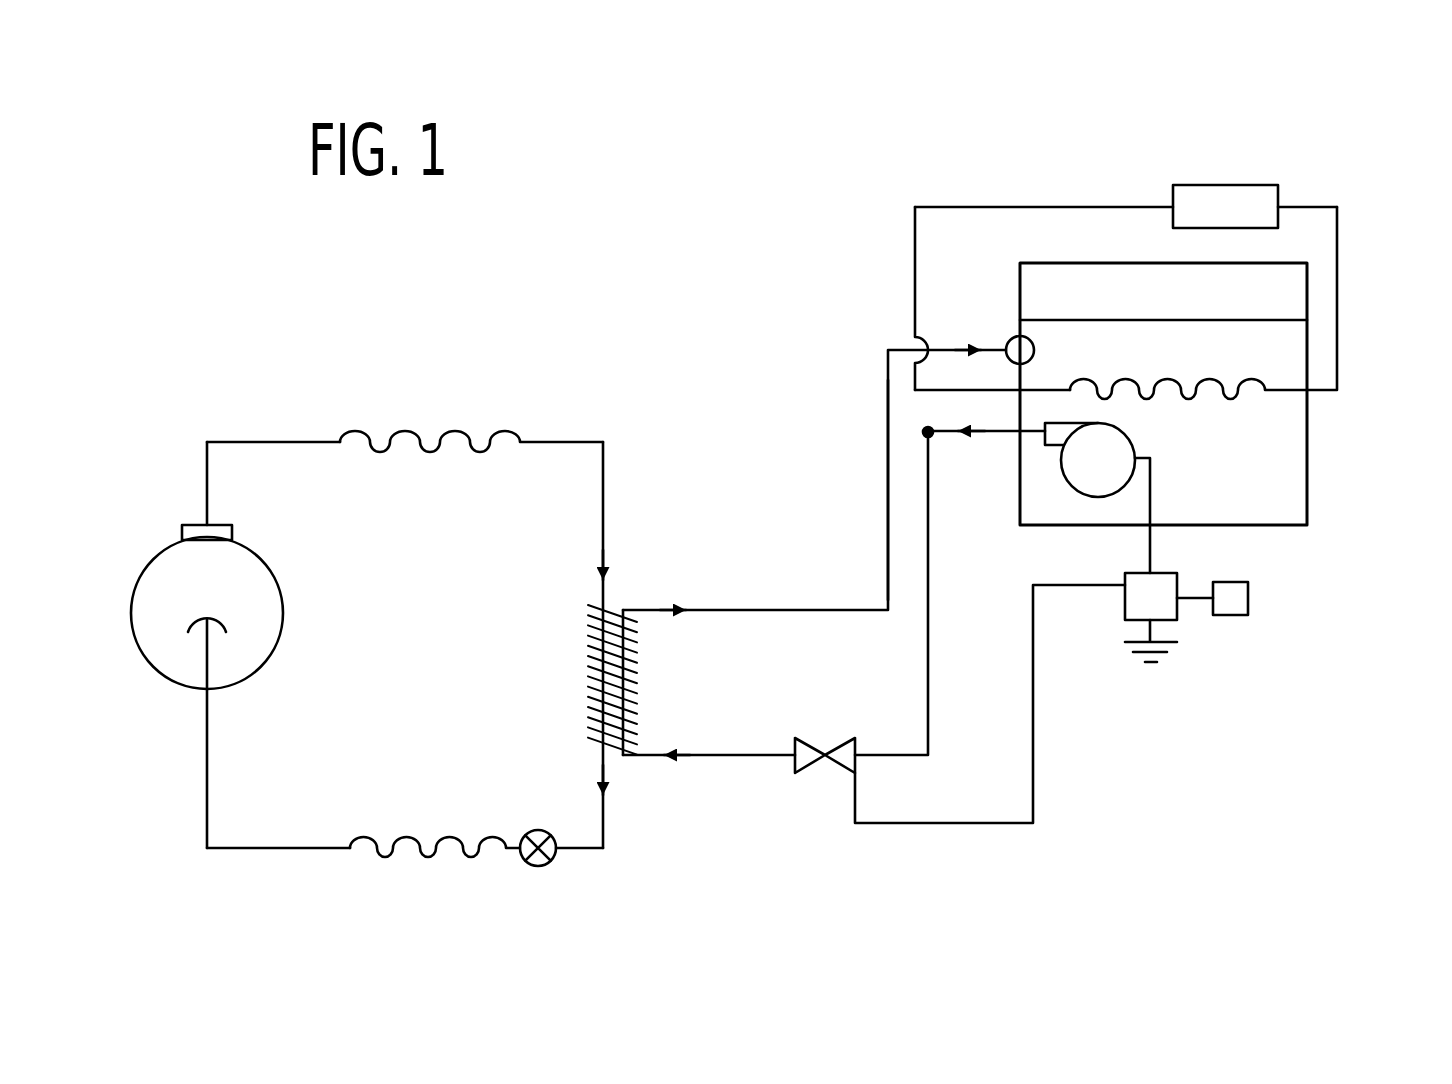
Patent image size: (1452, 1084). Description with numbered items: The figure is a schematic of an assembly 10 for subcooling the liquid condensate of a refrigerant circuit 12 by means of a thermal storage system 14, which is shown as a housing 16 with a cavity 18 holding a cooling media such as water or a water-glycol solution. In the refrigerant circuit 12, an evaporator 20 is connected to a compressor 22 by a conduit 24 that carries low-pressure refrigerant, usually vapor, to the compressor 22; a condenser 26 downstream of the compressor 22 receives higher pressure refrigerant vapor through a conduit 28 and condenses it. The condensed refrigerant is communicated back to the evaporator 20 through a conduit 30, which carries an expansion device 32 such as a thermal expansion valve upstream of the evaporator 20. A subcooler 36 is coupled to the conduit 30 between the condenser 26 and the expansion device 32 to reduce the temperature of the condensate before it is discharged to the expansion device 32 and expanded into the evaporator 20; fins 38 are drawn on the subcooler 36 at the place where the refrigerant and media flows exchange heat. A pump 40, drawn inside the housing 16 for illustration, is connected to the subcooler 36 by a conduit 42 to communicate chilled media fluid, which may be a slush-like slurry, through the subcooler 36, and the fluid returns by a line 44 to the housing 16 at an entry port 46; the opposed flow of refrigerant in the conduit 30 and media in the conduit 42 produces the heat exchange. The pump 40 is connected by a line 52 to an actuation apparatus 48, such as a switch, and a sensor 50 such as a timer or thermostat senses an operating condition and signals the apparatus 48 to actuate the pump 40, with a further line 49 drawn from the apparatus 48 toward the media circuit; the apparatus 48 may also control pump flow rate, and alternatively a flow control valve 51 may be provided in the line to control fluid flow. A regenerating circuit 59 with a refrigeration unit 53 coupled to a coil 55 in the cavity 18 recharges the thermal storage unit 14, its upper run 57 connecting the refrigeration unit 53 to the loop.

The assembly 10 is at (984, 572).
The refrigerant circuit 12 is at (263, 407).
The thermal storage system 14 is at (878, 293).
The housing 16 is at (1215, 394).
The cavity 18 is at (1128, 308).
The evaporator 20 is at (385, 860).
The compressor 22 is at (250, 680).
The conduit 24 is at (258, 848).
The condenser 26 is at (465, 452).
The conduit 28 is at (302, 443).
The conduit 30 is at (605, 467).
The expansion device 32 is at (556, 860).
The subcooler 36 is at (612, 668).
The heat exchanger fins 38 is at (633, 690).
The pump 40 is at (1125, 440).
The conduit 42 is at (930, 705).
The line 44 is at (760, 612).
The entry port 46 is at (1010, 340).
The actuation apparatus 48 is at (1125, 592).
The control line 49 is at (1035, 745).
The sensor 50 is at (1250, 598).
The flow control valve 51 is at (795, 765).
The line 52 is at (1152, 497).
The refrigeration unit 53 is at (1197, 185).
The coil 55 is at (1170, 385).
The bypass line 57 is at (985, 210).
The regenerating circuit 59 is at (938, 205).